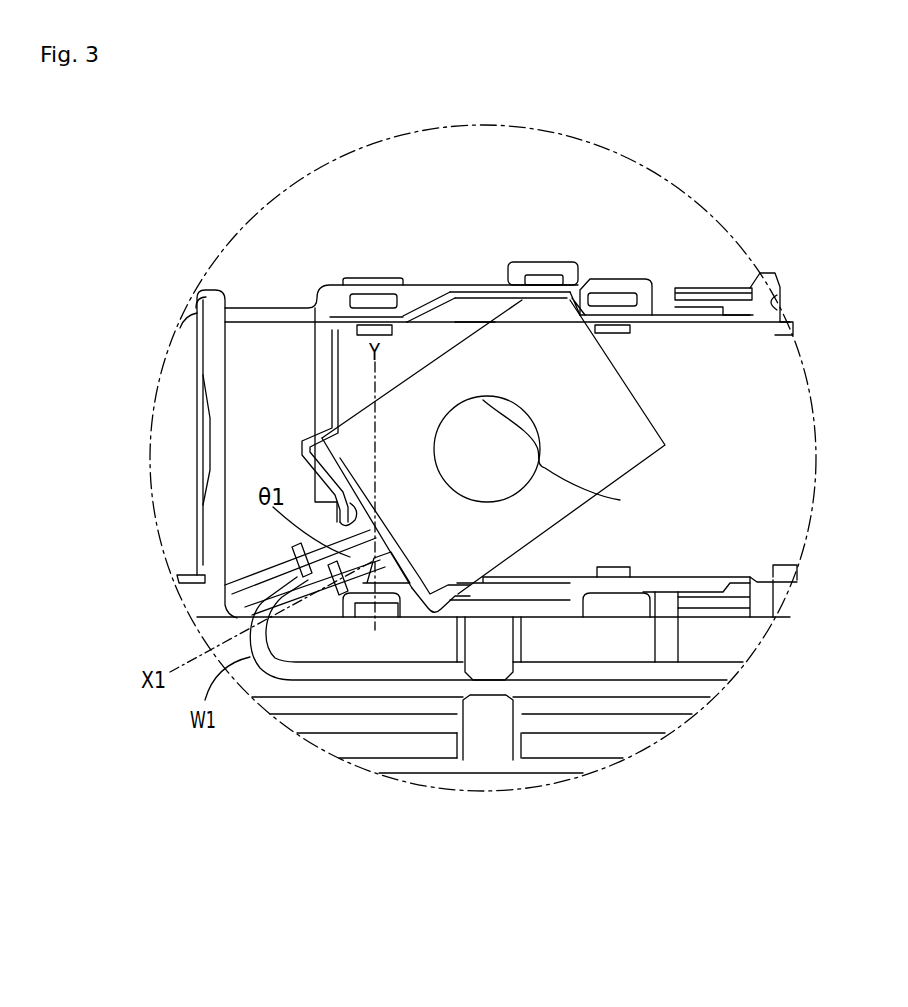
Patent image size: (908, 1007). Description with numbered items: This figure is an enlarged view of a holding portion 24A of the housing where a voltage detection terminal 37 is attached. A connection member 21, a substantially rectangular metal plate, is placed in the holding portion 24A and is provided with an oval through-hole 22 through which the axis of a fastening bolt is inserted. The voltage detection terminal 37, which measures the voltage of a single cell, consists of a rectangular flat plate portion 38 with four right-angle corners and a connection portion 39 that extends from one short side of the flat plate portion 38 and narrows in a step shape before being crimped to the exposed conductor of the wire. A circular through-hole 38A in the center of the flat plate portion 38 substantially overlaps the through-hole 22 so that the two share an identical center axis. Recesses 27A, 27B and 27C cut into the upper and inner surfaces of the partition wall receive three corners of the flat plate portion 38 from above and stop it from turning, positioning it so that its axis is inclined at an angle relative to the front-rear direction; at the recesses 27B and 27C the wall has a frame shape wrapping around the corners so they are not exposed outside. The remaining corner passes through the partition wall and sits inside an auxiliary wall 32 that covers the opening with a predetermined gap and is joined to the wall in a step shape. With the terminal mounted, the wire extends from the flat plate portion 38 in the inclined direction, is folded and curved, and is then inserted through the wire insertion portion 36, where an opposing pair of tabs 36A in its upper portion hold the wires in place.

The holding portion (24) 24A is at (596, 196).
The connection member 21 is at (793, 472).
The through-hole 22 is at (488, 404).
The recess 27A is at (572, 303).
The recess 27B is at (334, 437).
The recess 27C is at (430, 620).
The auxiliary wall 32 is at (540, 262).
The wire insertion portion 36 is at (742, 646).
The tabs 36A is at (493, 668).
The voltage detection terminal 37 is at (428, 350).
The flat plate portion 38 is at (606, 392).
The circular through-hole 38A is at (620, 500).
The connection portion 39 is at (290, 582).